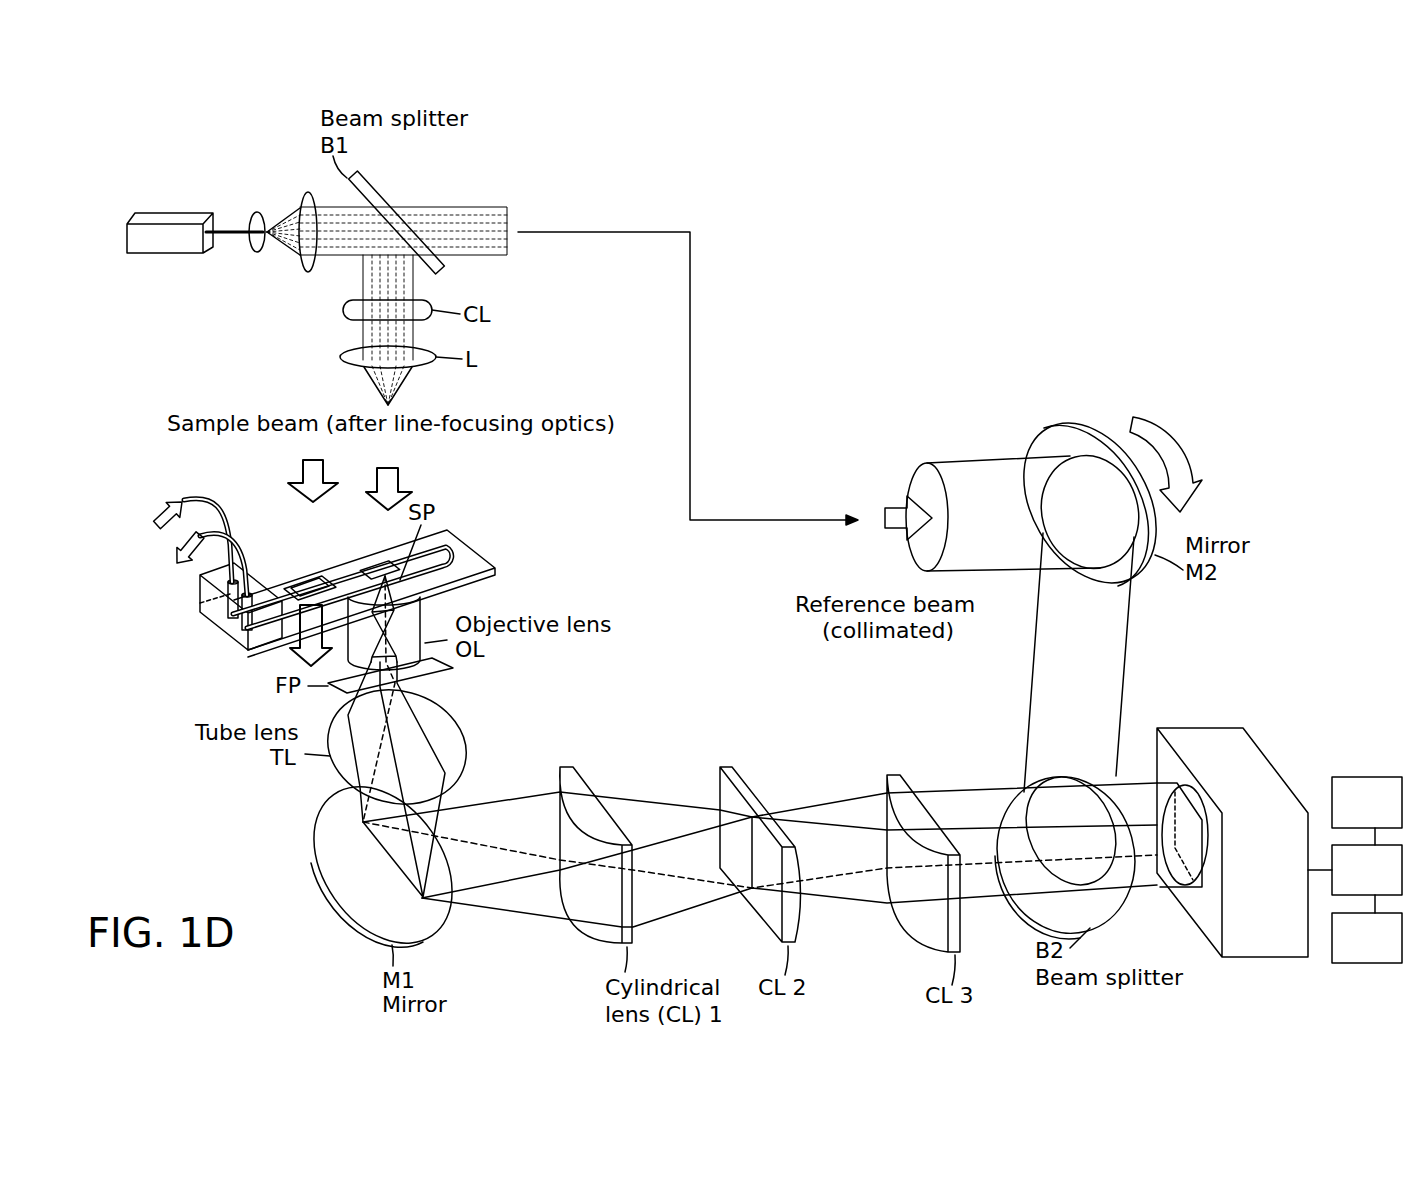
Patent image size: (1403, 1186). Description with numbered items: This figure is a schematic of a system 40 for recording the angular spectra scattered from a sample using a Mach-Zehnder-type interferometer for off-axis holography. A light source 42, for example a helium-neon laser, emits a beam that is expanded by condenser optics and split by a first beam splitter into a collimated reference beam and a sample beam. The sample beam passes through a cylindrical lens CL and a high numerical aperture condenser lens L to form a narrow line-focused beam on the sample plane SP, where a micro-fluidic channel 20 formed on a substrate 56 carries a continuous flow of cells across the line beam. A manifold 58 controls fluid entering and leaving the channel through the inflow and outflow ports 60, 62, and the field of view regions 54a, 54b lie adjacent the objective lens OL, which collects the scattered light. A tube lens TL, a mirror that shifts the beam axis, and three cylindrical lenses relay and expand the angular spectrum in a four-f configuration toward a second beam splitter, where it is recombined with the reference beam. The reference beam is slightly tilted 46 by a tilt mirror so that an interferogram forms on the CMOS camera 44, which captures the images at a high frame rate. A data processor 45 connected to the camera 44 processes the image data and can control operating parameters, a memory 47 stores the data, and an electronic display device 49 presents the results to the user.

The micro-fluidic channel 20 is at (445, 543).
The system 40 is at (1094, 250).
The light source 42 is at (166, 257).
The CMOS camera 44 is at (1265, 958).
The data processor 45 is at (1388, 886).
The tilt of the reference beam 46 is at (1172, 437).
The memory 47 is at (1388, 952).
The electronic display device 49 is at (1388, 817).
The field of view 54a is at (377, 562).
The field of view 54b is at (310, 574).
The substrate 56 is at (470, 559).
The manifold 58 is at (230, 622).
The inflow port 60 is at (152, 515).
The outflow port 62 is at (180, 566).